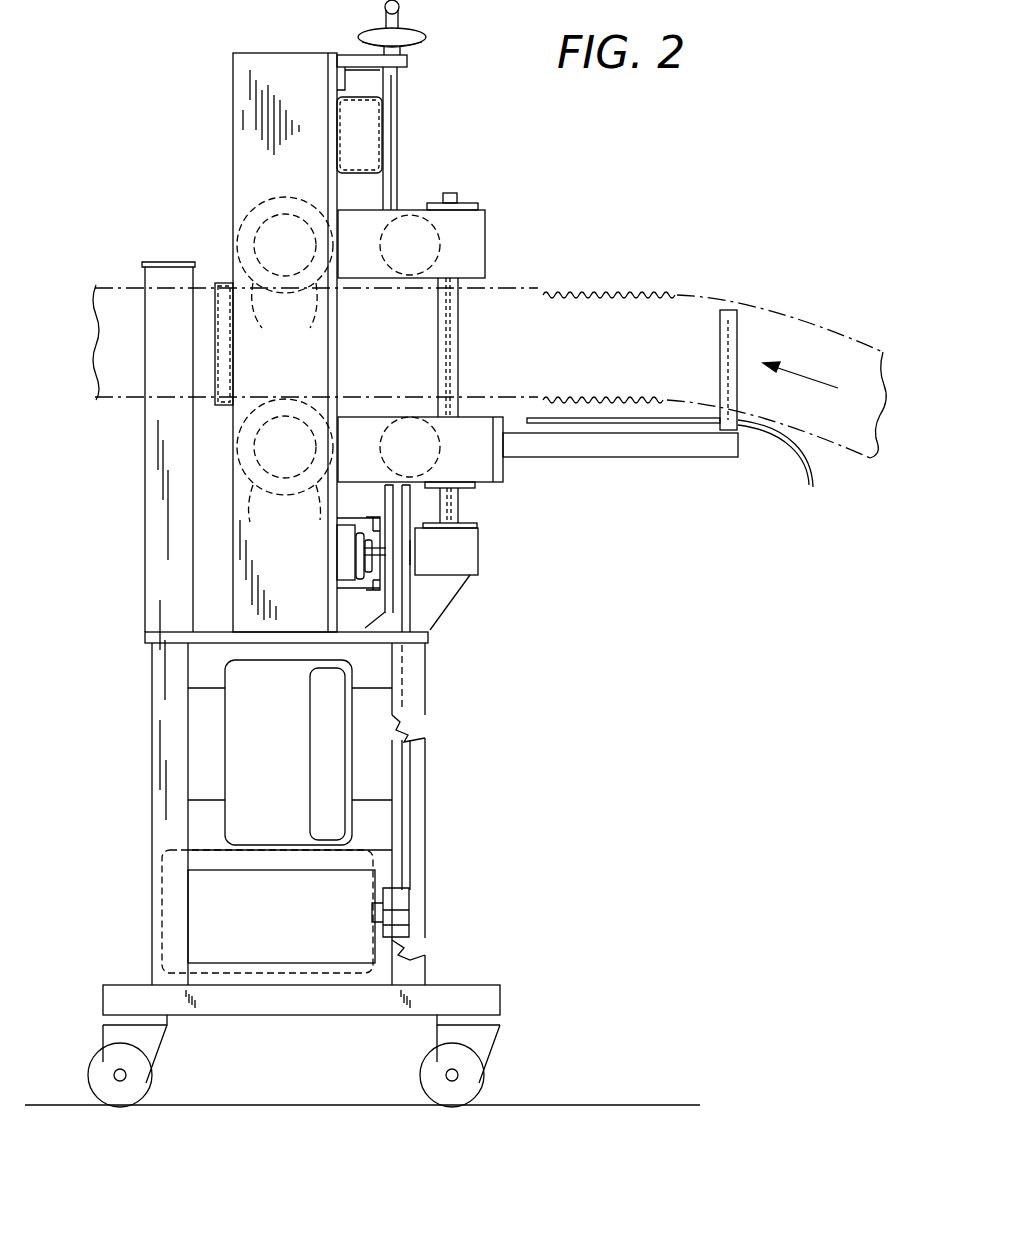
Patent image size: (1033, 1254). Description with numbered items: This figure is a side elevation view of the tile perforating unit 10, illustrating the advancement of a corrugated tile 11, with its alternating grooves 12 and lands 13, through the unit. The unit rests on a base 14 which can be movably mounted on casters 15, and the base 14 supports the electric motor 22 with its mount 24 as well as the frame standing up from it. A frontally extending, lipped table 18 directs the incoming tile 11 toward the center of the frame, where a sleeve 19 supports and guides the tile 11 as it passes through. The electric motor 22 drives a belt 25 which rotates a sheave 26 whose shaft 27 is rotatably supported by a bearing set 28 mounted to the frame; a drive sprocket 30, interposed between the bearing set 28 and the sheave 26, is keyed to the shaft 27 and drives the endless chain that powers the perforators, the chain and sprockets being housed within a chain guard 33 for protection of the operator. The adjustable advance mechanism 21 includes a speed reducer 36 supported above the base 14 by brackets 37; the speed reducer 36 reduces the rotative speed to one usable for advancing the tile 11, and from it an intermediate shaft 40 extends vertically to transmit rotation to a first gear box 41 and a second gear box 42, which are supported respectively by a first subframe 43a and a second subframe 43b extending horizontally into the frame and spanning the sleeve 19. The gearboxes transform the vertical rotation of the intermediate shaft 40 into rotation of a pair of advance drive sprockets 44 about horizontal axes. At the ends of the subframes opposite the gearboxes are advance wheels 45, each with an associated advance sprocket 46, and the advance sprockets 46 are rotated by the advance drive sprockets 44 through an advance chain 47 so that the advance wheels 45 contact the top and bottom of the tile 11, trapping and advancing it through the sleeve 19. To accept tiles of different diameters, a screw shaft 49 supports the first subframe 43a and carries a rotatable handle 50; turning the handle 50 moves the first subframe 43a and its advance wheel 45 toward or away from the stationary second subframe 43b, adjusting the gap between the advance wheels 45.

The tile perforating unit 10 is at (648, 130).
The corrugated tile 11 is at (489, 348).
The grooves 12 is at (548, 292).
The lands 13 is at (622, 295).
The base 14 is at (426, 822).
The casters 15 is at (488, 1086).
The lipped table 18 is at (646, 458).
The sleeve 19 is at (404, 353).
The advance mechanism 21 is at (476, 188).
The electric motor 22 is at (290, 923).
The motor mount 24 is at (280, 747).
The belt 25 is at (408, 778).
The sheave 26 is at (412, 600).
The shaft 27 is at (368, 588).
The bearing set 28 is at (340, 550).
The drive sprocket 30 is at (368, 526).
The chain guard 33 is at (385, 108).
The speed reducer 36 is at (478, 562).
The brackets 37 is at (452, 602).
The intermediate shaft 40 is at (458, 348).
The first gear box 41 is at (478, 206).
The second gear box 42 is at (462, 492).
The first subframe 43a is at (487, 252).
The second subframe 43b is at (505, 472).
The advance drive sprockets 44 is at (435, 345).
The advance wheels 45 is at (284, 197).
The advance sprocket 46 is at (280, 372).
The advance chain 47 is at (286, 409).
The screw shaft 49 is at (398, 140).
The rotatable handle 50 is at (413, 45).